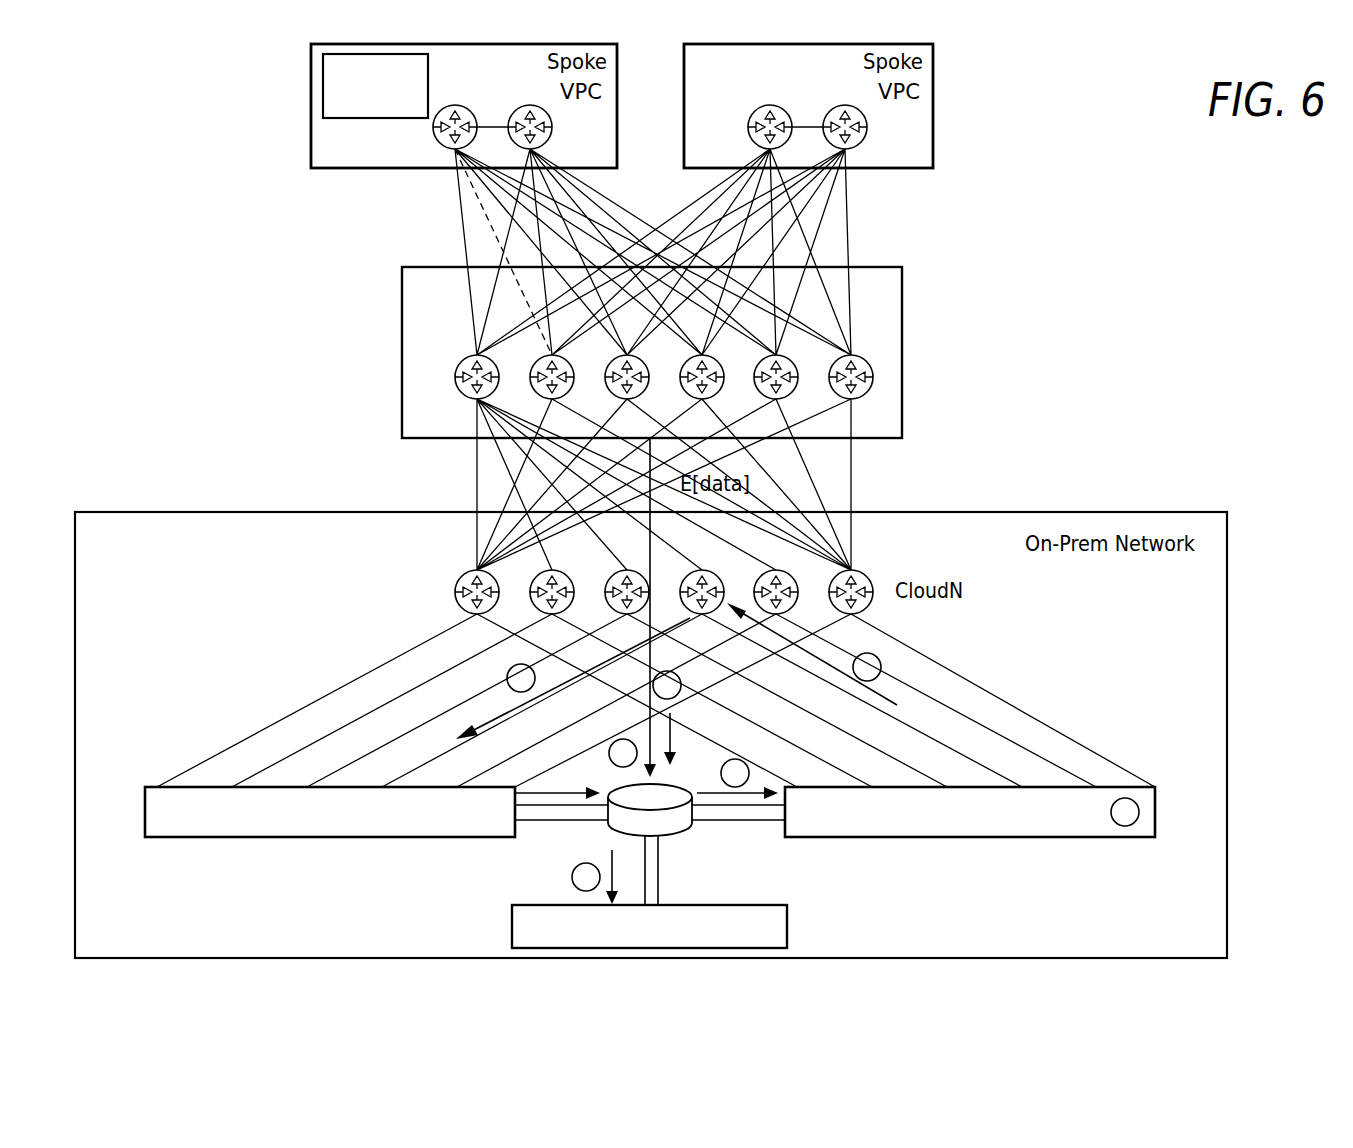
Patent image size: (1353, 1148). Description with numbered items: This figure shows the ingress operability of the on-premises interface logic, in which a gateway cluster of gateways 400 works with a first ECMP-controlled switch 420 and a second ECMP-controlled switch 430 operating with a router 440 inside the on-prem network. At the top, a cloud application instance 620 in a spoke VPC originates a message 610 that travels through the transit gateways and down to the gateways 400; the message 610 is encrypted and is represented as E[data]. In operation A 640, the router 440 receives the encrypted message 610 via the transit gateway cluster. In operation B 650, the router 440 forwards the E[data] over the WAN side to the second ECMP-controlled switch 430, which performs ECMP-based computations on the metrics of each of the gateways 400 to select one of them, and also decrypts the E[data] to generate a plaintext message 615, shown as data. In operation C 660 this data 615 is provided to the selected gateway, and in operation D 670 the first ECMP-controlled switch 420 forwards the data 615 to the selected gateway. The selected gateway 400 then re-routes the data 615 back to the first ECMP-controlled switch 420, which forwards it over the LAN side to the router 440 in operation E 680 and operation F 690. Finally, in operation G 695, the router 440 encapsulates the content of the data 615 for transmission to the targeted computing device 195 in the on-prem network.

The cloud application instance 620 is at (322, 88).
The message 610 is at (483, 212).
The gateways 400 is at (890, 537).
The operation A 640 is at (677, 674).
The operation D 670 is at (881, 660).
The operation E 680 is at (505, 678).
The plaintext message 615 is at (490, 716).
The operation F 690 is at (615, 744).
The operation B 650 is at (749, 775).
The first ECMP-controlled switch 420 is at (333, 838).
The second ECMP-controlled switch 430 is at (985, 838).
The operation C 660 is at (1128, 826).
The router 440 is at (668, 838).
The operation G 695 is at (572, 877).
The computing device 195 is at (787, 928).